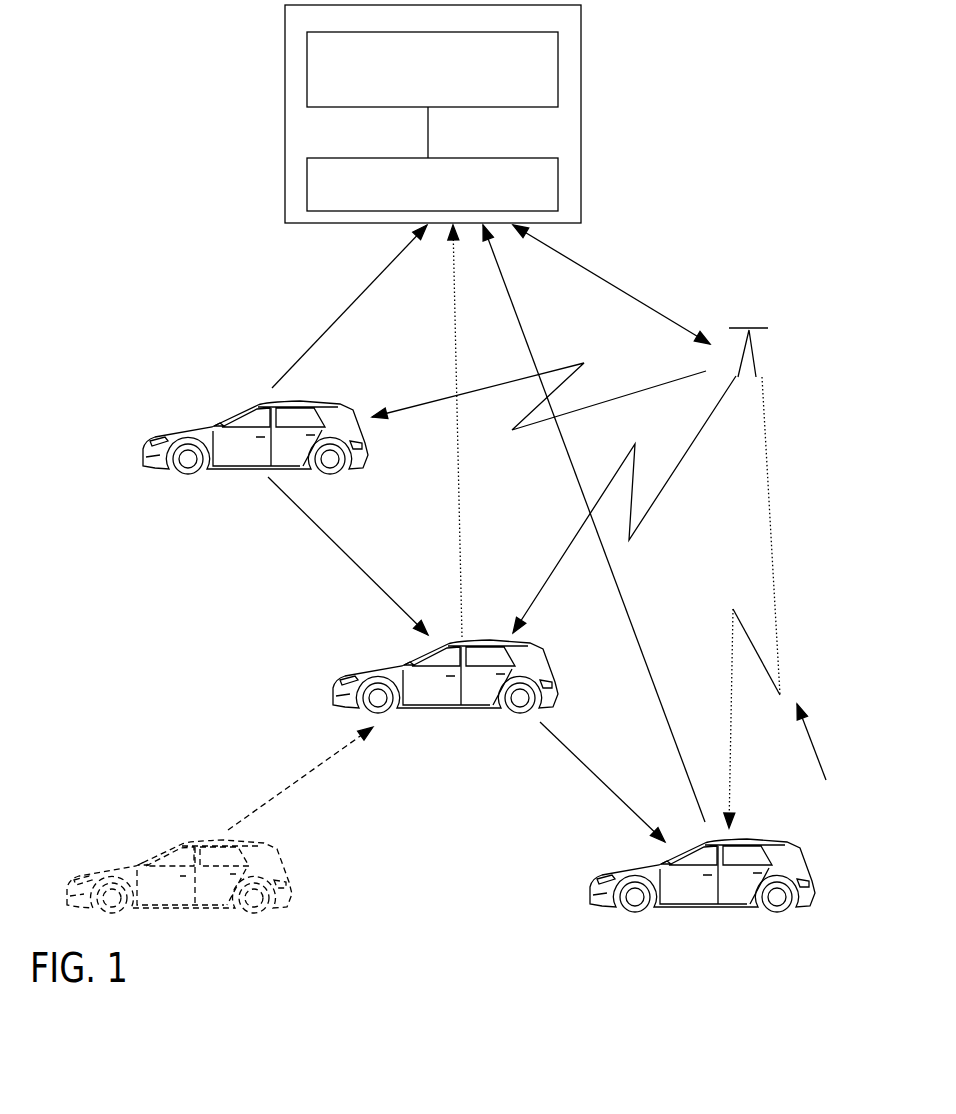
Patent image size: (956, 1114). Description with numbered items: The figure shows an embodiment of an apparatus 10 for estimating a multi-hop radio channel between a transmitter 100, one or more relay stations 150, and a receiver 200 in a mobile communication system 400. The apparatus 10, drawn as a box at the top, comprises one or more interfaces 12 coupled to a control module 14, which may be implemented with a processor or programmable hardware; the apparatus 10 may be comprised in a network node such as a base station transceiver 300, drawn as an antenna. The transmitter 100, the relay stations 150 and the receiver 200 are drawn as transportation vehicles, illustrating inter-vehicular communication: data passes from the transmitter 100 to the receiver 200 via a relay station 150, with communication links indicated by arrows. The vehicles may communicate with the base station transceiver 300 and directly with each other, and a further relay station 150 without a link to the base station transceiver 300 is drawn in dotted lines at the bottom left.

The apparatus 10 is at (573, 25).
The interface 12 is at (552, 185).
The control module 14 is at (552, 101).
The transmitter 100 is at (177, 433).
The relay station 150 is at (374, 677).
The receiver 200 is at (622, 872).
The base station transceiver 300 is at (759, 328).
The mobile communication system 400 is at (825, 757).